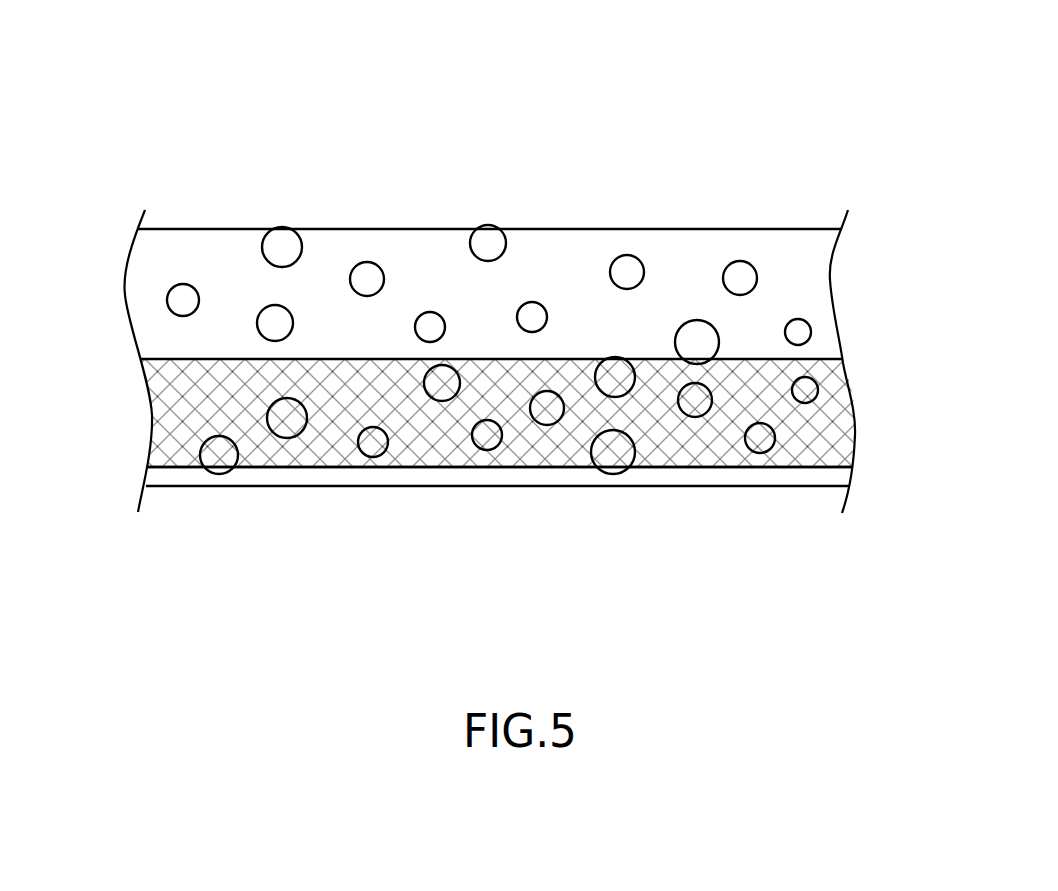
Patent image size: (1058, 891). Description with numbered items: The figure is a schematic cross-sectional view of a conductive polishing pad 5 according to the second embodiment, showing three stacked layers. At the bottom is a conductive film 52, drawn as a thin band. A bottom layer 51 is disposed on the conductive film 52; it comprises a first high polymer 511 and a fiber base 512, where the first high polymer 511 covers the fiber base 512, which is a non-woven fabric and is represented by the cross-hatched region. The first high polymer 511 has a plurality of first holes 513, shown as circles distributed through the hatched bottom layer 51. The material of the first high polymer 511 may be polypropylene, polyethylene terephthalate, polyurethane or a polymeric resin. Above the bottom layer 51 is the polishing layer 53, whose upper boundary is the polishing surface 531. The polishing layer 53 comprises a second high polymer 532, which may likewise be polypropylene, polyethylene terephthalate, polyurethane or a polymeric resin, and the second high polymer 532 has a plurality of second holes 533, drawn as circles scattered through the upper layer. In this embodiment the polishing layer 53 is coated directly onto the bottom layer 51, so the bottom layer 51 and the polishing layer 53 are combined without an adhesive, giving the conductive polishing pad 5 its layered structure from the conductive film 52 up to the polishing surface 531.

The conductive polishing pad 5 is at (247, 135).
The bottom layer 51 is at (120, 408).
The first high polymer 511 is at (842, 367).
The fiber base 512 is at (807, 440).
The first holes 513 is at (762, 437).
The conductive film 52 is at (122, 482).
The polishing layer 53 is at (106, 310).
The polishing surface 531 is at (802, 228).
The second high polymer 532 is at (818, 255).
The second holes 533 is at (743, 272).